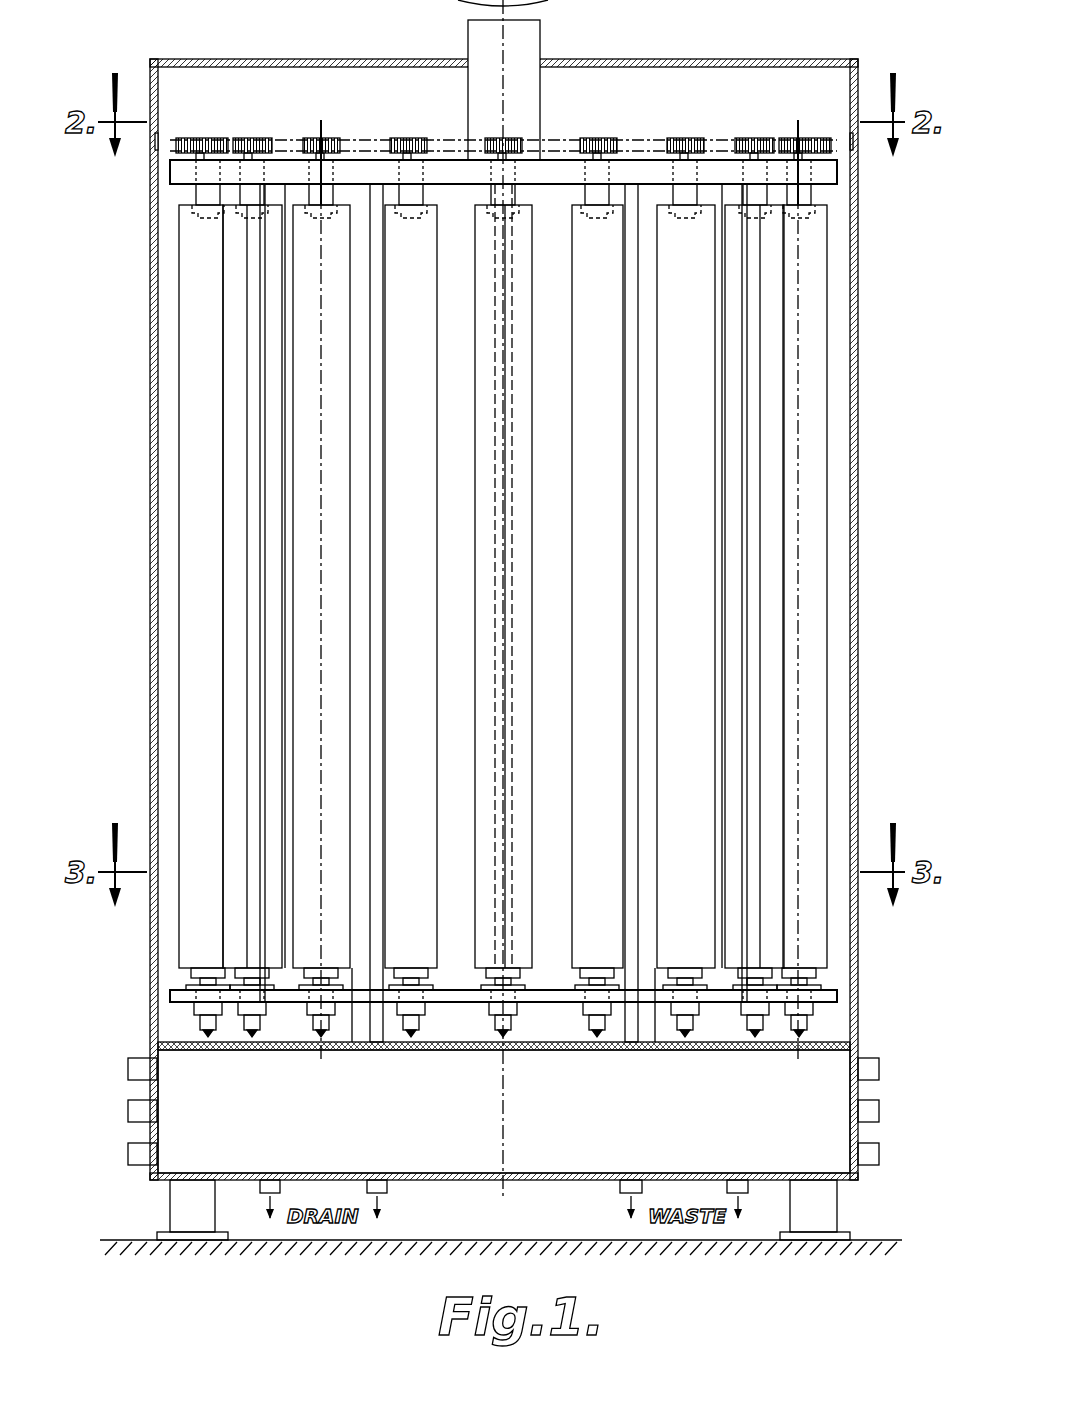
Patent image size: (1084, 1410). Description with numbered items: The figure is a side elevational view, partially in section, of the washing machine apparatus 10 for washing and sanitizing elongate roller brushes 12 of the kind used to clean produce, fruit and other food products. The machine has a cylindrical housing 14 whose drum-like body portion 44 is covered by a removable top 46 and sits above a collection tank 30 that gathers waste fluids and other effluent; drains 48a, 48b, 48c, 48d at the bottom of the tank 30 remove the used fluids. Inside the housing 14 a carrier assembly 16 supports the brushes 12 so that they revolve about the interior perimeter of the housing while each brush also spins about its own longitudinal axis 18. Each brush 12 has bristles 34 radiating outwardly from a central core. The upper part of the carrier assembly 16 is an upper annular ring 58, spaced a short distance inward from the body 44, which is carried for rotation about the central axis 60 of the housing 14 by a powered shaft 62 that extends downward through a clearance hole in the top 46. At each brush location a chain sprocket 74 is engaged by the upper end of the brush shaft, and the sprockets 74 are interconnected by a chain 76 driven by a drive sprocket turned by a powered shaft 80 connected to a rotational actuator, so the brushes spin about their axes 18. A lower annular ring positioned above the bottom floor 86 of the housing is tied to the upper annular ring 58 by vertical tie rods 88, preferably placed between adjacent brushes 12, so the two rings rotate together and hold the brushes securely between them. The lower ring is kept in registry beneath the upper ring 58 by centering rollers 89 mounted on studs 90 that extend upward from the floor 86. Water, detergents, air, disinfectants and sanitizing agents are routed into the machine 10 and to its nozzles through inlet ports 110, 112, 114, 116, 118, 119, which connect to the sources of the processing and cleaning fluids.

The washing machine apparatus 10 is at (142, 16).
The roller brush 12 is at (278, 370).
The housing 14 is at (862, 258).
The carrier assembly 16 is at (306, 122).
The longitudinal axis 18 is at (321, 487).
The collection tank 30 is at (787, 1137).
The bristles 34 is at (835, 320).
The body portion 44 is at (860, 598).
The top 46 is at (690, 59).
The drain 48a is at (262, 1195).
The drain 48b is at (367, 1195).
The drain 48c is at (640, 1195).
The drain 48d is at (748, 1195).
The upper annular ring 58 is at (838, 172).
The central axis 60 is at (505, 48).
The powered shaft 62 is at (541, 30).
The chain sprocket 74 is at (825, 138).
The chain 76 is at (727, 138).
The powered shaft 80 is at (760, 733).
The bottom floor 86 is at (820, 1032).
The tie rod 88 is at (255, 678).
The centering roller 89 is at (360, 1000).
The stud 90 is at (360, 1038).
The inlet port 110 is at (883, 1069).
The inlet port 112 is at (883, 1111).
The inlet port 114 is at (883, 1154).
The inlet port 116 is at (124, 1069).
The inlet port 118 is at (124, 1111).
The inlet port 119 is at (124, 1154).